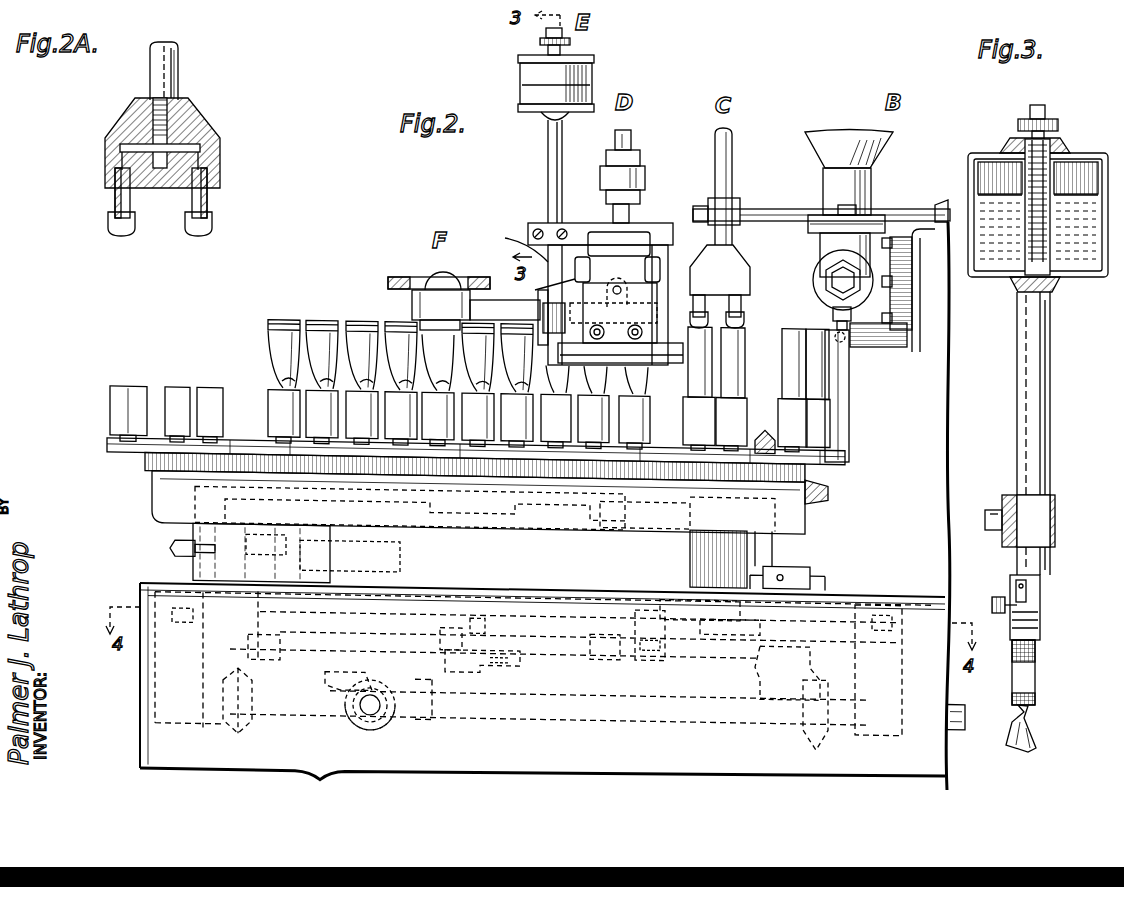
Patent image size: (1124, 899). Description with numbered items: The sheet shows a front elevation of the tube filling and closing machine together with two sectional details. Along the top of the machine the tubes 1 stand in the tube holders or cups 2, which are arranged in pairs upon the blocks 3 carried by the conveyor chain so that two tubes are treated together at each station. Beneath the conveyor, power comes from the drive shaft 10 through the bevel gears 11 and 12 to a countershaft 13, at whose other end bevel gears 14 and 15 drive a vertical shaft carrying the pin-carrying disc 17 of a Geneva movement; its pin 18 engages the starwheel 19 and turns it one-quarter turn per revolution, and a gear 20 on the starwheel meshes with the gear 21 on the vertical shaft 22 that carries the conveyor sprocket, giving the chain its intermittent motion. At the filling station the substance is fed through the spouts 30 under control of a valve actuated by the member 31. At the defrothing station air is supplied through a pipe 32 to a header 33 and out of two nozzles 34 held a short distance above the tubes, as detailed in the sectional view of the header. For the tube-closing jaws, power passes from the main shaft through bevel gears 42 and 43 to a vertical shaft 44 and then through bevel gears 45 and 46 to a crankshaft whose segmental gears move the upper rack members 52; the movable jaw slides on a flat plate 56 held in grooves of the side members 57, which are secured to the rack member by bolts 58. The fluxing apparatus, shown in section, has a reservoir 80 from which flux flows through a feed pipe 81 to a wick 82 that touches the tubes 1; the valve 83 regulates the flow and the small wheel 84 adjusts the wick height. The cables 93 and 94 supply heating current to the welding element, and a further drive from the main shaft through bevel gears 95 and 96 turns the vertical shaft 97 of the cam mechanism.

In FIG. 3, the tubes 1 is at (1036, 742).
In FIG. 2, the tubes 1 is at (358, 354).
In FIG. 2, the tube holders or cups 2 is at (280, 402).
In FIG. 2, the blocks 3 is at (125, 453).
In FIG. 2, the drive shaft 10 is at (625, 730).
In FIG. 2, the bevel gear 11 is at (429, 717).
In FIG. 2, the bevel gear 12 is at (366, 736).
In FIG. 2, the countershaft 13 is at (358, 714).
In FIG. 2, the bevel gear 14 is at (370, 718).
In FIG. 2, the bevel gear 15 is at (329, 688).
In FIG. 2, the pin-carrying disc 17 is at (472, 670).
In FIG. 2, the pin 18 is at (448, 627).
In FIG. 2, the starwheel 19 is at (578, 657).
In FIG. 2, the gear 20 is at (478, 630).
In FIG. 2, the gear 21 is at (731, 645).
In FIG. 2, the vertical shaft 22 is at (642, 658).
In FIG. 2, the spouts 30 is at (834, 320).
In FIG. 2, the member 31 is at (890, 353).
In FIG. 2A, the pipe 32 is at (175, 64).
In FIG. 2, the pipe 32 is at (740, 122).
In FIG. 2A, the header 33 is at (192, 124).
In FIG. 2, the header 33 is at (720, 270).
In FIG. 2A, the nozzles 34 is at (186, 220).
In FIG. 2, the nozzles 34 is at (709, 322).
In FIG. 2, the bevel gear 42 is at (802, 749).
In FIG. 2, the bevel gear 43 is at (752, 688).
In FIG. 2, the vertical shaft 44 is at (790, 556).
In FIG. 2, the bevel gear 45 is at (824, 494).
In FIG. 2, the bevel gear 46 is at (763, 430).
In FIG. 2, the upper rack members 52 is at (590, 262).
In FIG. 2, the flat plate 56 is at (617, 354).
In FIG. 2, the side members 57 is at (690, 250).
In FIG. 2, the bolts 58 is at (748, 242).
In FIG. 3, the reservoir 80 is at (1090, 278).
In FIG. 2, the reservoir 80 is at (588, 76).
In FIG. 3, the feed pipe 81 is at (1052, 428).
In FIG. 2, the feed pipe 81 is at (548, 160).
In FIG. 3, the wick 82 is at (1030, 673).
In FIG. 3, the valve 83 is at (1043, 110).
In FIG. 2, the valve 83 is at (540, 36).
In FIG. 3, the small wheel 84 is at (996, 596).
In FIG. 2, the cable 93 is at (481, 277).
In FIG. 2, the cable 94 is at (395, 277).
In FIG. 2, the bevel gear 95 is at (250, 729).
In FIG. 2, the bevel gear 96 is at (243, 650).
In FIG. 2, the vertical shaft 97 is at (253, 612).